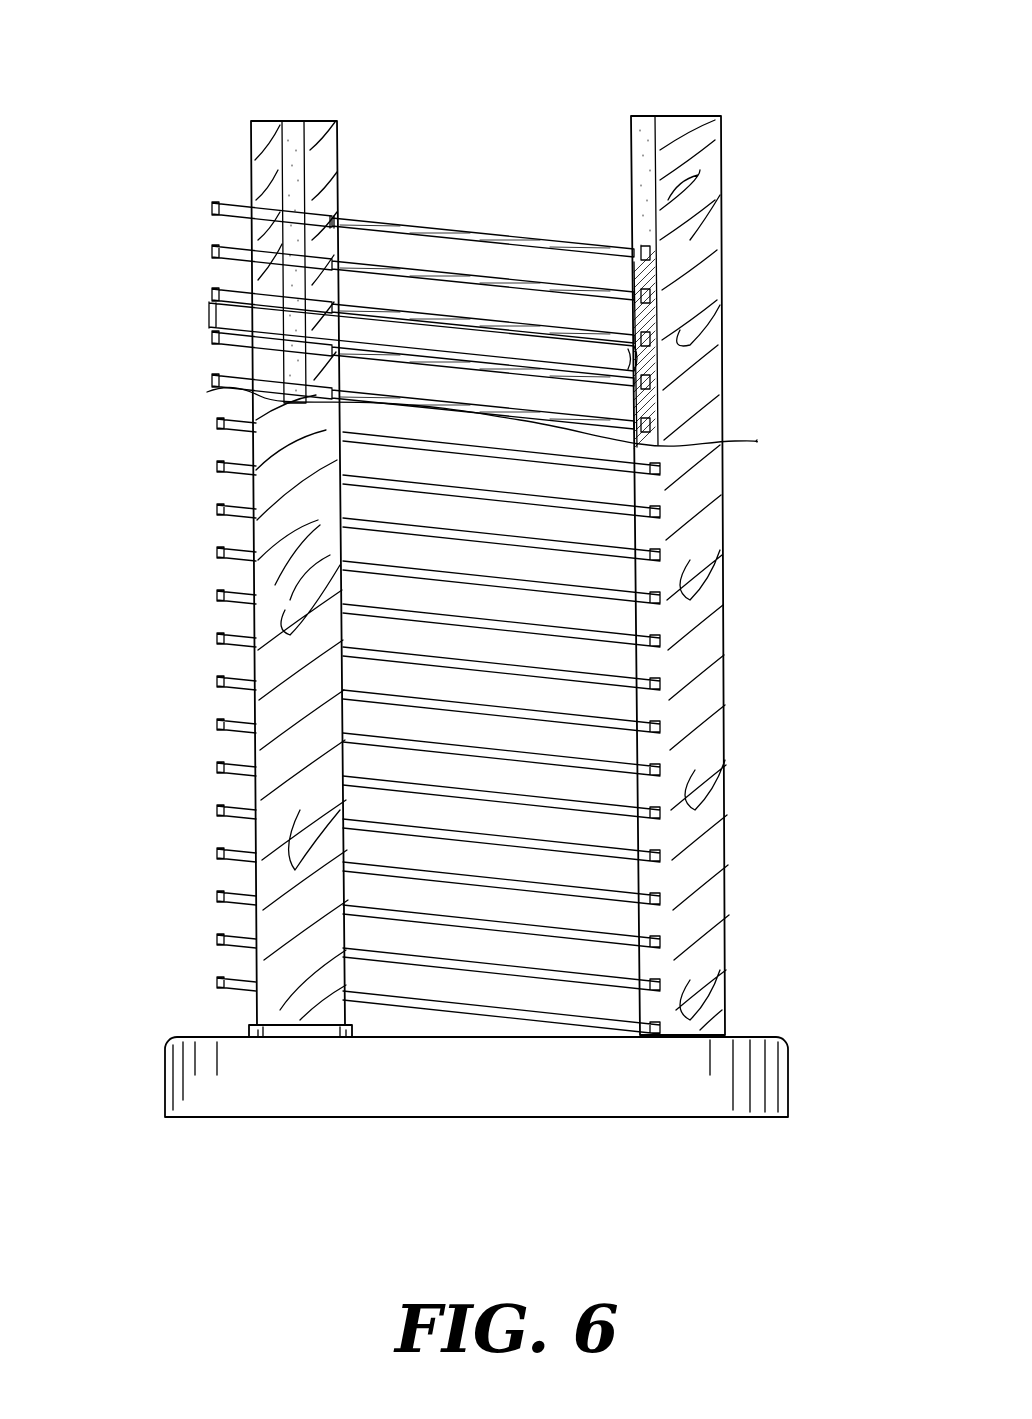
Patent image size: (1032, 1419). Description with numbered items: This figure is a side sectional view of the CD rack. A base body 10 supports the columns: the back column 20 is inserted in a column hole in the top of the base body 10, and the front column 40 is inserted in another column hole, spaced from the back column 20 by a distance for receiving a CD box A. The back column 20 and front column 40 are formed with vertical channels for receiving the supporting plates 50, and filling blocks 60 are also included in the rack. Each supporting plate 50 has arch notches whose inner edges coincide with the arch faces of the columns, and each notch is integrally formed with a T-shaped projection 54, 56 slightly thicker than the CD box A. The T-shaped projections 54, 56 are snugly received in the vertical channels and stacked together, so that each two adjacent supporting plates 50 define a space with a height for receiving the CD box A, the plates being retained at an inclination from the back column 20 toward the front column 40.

The base body 10 is at (662, 1102).
The back column 20 is at (722, 178).
The front column 40 is at (252, 130).
The supporting plate 50 is at (215, 205).
The T-shaped projection 54 is at (650, 270).
The T-shaped projection 56 is at (338, 215).
The filling block 60 is at (297, 120).
The CD box A is at (208, 320).